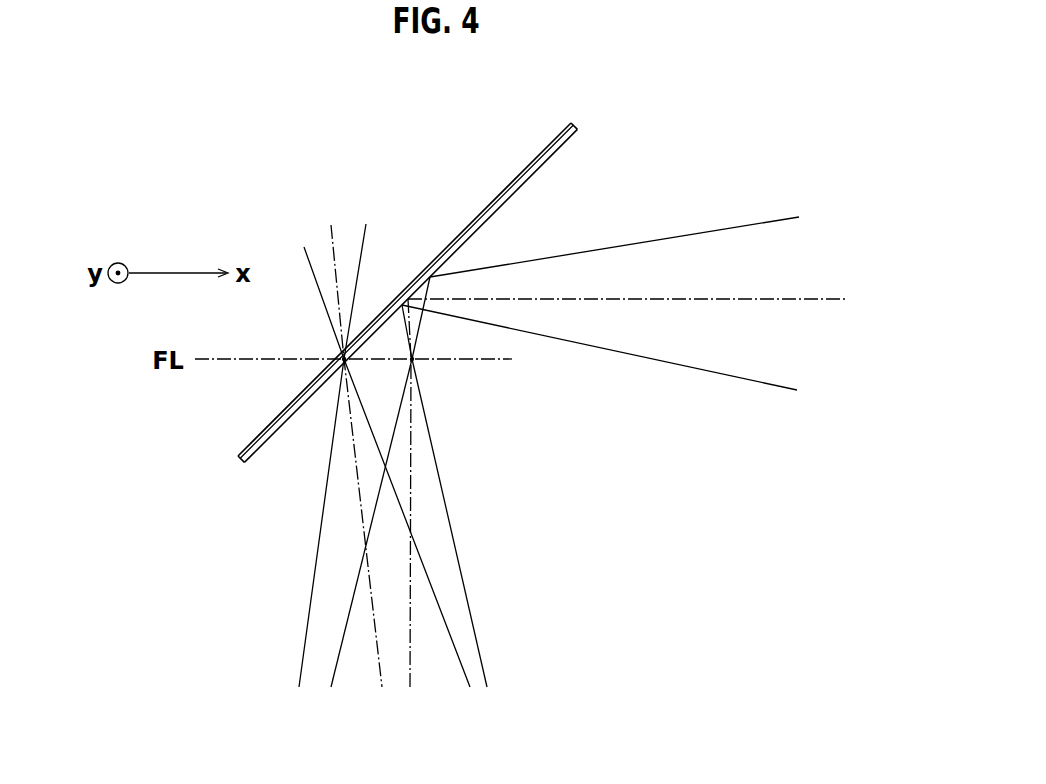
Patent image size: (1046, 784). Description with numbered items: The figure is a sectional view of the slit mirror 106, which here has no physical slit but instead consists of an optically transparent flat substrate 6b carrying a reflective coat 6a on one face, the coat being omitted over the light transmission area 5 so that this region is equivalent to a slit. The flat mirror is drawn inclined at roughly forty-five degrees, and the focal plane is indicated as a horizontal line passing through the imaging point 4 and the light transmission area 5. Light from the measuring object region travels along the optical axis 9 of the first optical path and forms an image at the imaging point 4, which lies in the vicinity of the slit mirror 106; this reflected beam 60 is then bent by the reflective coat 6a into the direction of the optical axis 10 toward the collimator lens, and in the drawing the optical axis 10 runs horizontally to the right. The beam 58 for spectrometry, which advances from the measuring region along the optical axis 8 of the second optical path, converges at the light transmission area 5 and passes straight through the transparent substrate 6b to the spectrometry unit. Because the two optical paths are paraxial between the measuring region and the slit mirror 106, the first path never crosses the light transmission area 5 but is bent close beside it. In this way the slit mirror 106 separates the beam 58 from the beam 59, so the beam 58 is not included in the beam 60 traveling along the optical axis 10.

The slit mirror 106 is at (446, 254).
The reflective coat 6a is at (555, 152).
The optically transparent flat substrate 6b is at (578, 128).
The beam 60 is at (733, 225).
The optical axis 10 is at (733, 298).
The imaging point 4 is at (423, 365).
The light transmission area 5 is at (358, 365).
The optical axis 9 is at (412, 477).
The beam 59 is at (450, 522).
The optical axis 8 is at (372, 605).
The beam for spectrometry 58 is at (305, 625).